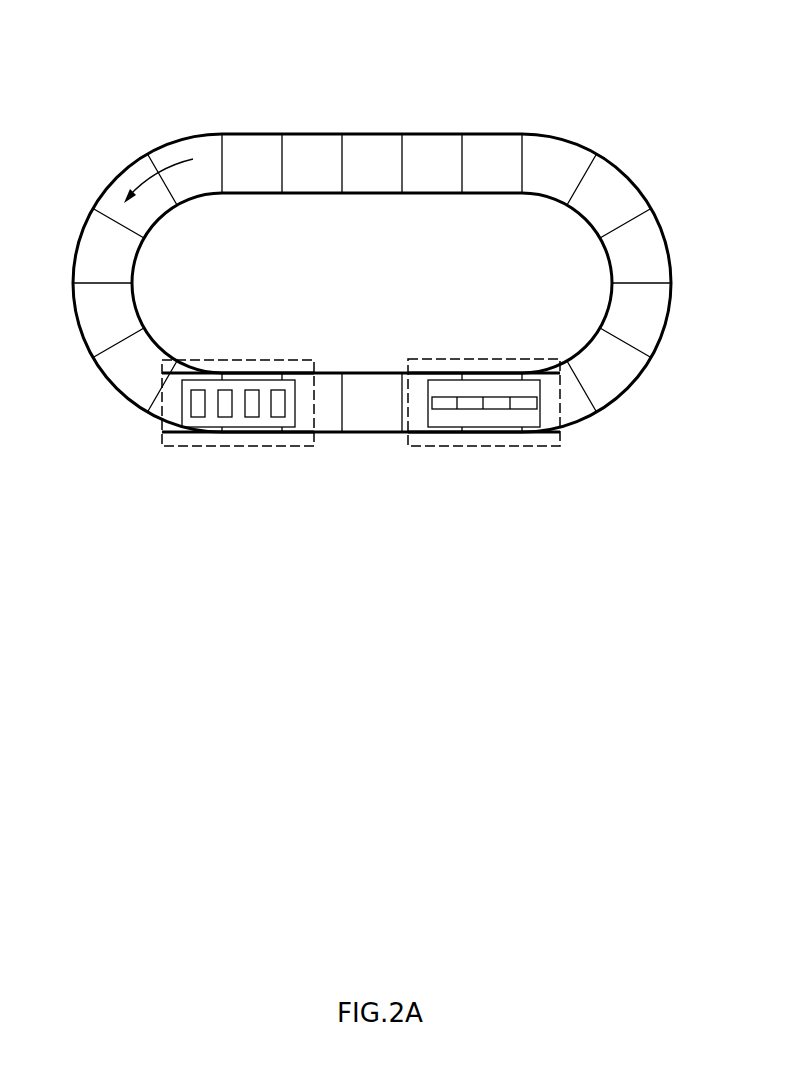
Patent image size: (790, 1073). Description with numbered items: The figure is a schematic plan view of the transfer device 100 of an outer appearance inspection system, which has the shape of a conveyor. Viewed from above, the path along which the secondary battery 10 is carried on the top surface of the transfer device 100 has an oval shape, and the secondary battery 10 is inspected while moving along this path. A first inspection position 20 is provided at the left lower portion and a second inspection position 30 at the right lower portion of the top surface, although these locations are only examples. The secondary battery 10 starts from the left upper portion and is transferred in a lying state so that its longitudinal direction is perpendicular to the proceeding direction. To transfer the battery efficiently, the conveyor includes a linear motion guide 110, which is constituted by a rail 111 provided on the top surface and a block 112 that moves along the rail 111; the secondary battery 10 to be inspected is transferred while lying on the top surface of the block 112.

The transfer device 100 is at (397, 76).
The linear motion guide 110 is at (352, 459).
The rail 111 is at (157, 407).
The block 112 is at (193, 423).
The secondary battery 10 is at (252, 408).
The first inspection position 20 is at (228, 358).
The second inspection position 30 is at (493, 358).